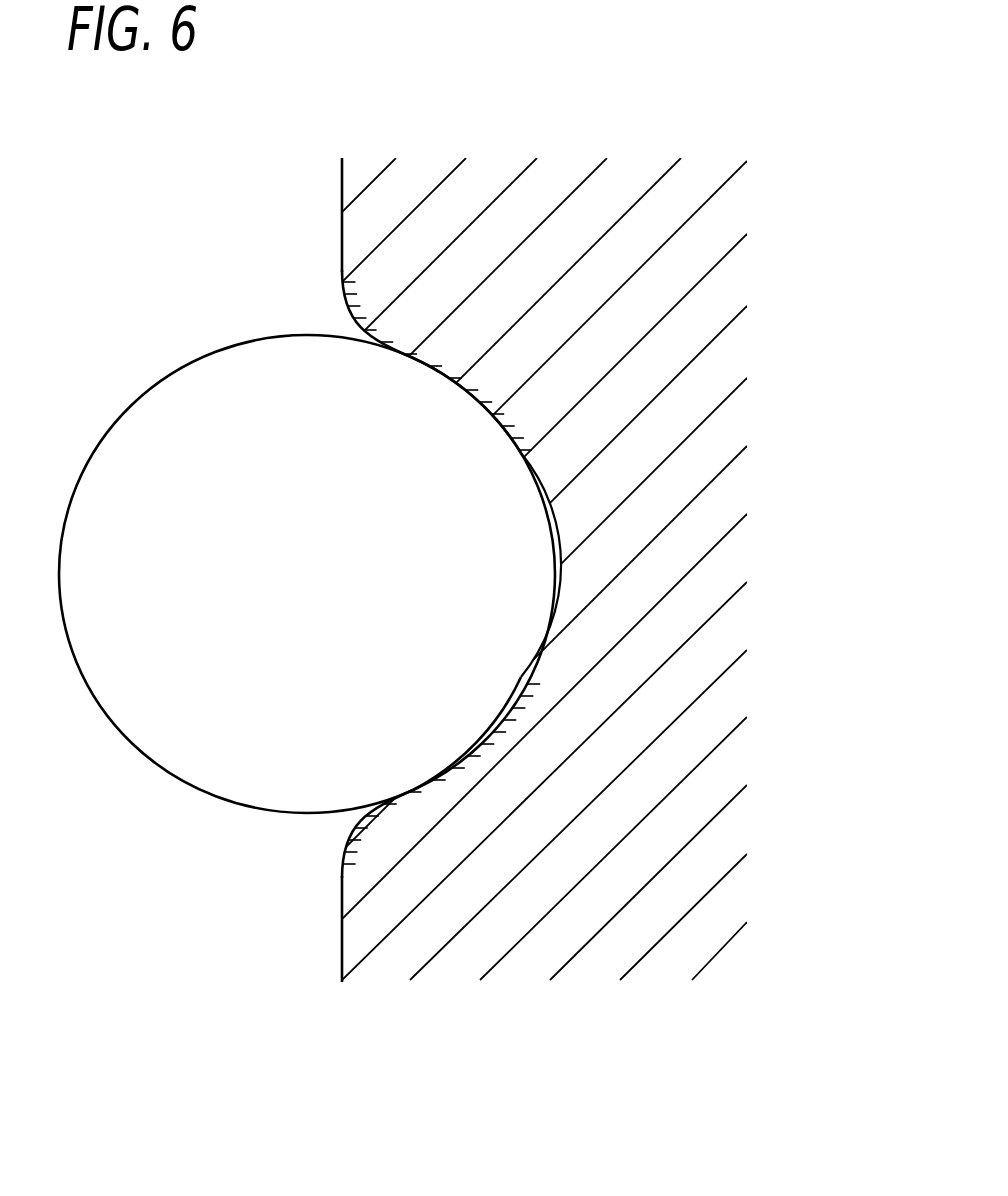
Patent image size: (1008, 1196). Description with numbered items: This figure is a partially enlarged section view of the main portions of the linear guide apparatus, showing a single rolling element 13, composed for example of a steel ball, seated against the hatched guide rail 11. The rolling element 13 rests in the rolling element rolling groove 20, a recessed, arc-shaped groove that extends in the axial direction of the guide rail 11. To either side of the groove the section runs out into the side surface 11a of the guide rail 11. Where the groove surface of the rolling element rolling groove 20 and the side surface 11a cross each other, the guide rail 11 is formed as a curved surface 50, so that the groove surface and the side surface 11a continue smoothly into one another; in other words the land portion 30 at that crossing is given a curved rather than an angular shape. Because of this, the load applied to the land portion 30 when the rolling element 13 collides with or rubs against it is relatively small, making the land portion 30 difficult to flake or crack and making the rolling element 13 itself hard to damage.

The guide rail 11 is at (373, 206).
The side surface 11a is at (341, 929).
The rolling element 13 is at (120, 675).
The rolling element rolling groove 20 is at (560, 530).
The land portion 30 is at (375, 306).
The curved surface 50 is at (352, 829).